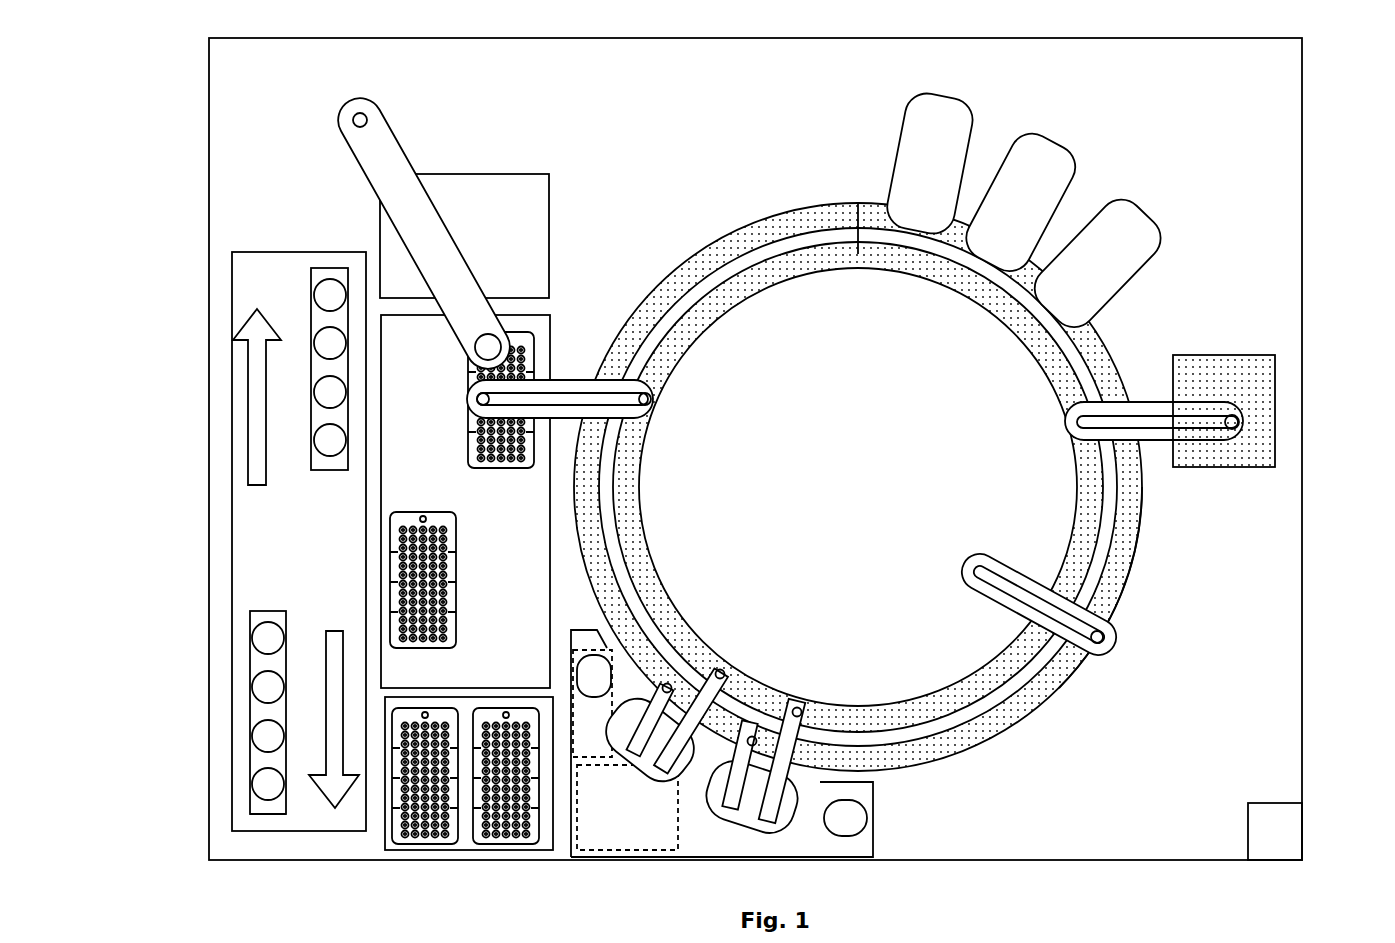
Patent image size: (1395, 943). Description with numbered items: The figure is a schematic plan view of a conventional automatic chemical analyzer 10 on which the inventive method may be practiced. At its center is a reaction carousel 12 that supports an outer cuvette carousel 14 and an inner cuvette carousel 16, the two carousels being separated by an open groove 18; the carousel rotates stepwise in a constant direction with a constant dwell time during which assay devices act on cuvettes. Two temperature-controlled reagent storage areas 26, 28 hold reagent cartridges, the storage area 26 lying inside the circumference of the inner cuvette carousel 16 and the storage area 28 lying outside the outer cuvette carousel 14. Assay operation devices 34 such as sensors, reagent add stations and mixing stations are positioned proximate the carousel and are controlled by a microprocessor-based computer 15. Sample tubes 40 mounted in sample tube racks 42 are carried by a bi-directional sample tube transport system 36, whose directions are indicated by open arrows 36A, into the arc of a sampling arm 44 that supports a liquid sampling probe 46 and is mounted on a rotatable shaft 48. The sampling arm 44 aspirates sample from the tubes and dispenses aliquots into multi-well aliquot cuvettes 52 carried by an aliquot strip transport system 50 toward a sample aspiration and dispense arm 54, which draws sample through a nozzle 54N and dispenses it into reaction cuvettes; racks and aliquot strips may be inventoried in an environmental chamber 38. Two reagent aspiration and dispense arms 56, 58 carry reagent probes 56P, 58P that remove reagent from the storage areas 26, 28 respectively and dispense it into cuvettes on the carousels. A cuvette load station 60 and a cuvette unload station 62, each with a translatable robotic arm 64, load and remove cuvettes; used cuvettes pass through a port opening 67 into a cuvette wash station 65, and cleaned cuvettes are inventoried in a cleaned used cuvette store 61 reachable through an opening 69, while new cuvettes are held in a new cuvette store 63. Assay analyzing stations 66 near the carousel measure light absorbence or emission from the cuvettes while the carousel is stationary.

The automatic chemical analyzer 10 is at (206, 62).
The reaction carousel 12 is at (735, 213).
The outer cuvette carousel 14 is at (806, 217).
The computer 15 is at (1275, 831).
The inner cuvette carousel 16 is at (858, 203).
The open groove 18 is at (728, 268).
The reagent storage area 26 is at (866, 539).
The reagent storage area 28 is at (1216, 352).
The assay operation devices 34 is at (1126, 592).
The sample tube transport system 36 is at (229, 668).
The open arrows 36A is at (255, 415).
The environmental chamber 38 is at (452, 173).
The sample tubes 40 is at (267, 640).
The sample tube racks 42 is at (284, 818).
The sampling arm 44 is at (410, 160).
The liquid sampling probe 46 is at (489, 333).
The rotatable shaft 48 is at (364, 105).
The aliquot strip transport system 50 is at (413, 308).
The aliquot cuvettes 52 is at (534, 318).
The sample aspiration and dispense arm 54 is at (632, 378).
The nozzle 54N is at (653, 405).
The reagent aspiration and dispense arm 56 is at (968, 575).
The reagent probe 56P is at (1101, 642).
The reagent aspiration and dispense arm 58 is at (1158, 400).
The reagent probe 58P is at (1240, 418).
The cuvette load station 60 is at (672, 776).
The cleaned used cuvette store 61 is at (583, 648).
The cuvette unload station 62 is at (746, 824).
The new cuvette store 63 is at (617, 850).
The translatable robotic arm 64 is at (797, 708).
The cuvette wash station 65 is at (851, 845).
The assay analyzing stations 66 is at (968, 123).
The port opening 67 is at (869, 818).
The opening 69 is at (599, 672).